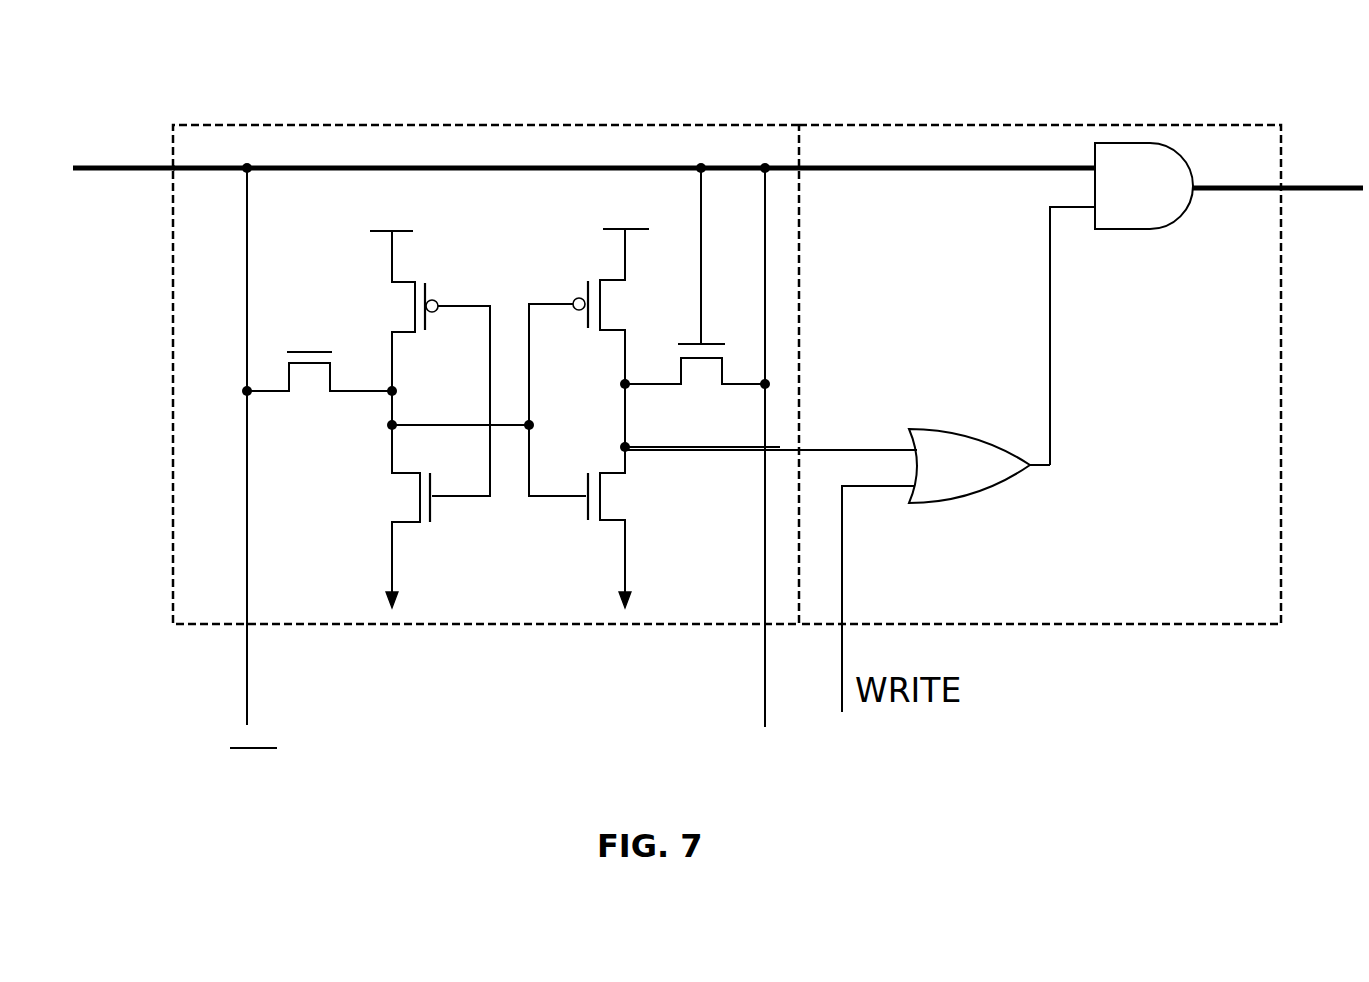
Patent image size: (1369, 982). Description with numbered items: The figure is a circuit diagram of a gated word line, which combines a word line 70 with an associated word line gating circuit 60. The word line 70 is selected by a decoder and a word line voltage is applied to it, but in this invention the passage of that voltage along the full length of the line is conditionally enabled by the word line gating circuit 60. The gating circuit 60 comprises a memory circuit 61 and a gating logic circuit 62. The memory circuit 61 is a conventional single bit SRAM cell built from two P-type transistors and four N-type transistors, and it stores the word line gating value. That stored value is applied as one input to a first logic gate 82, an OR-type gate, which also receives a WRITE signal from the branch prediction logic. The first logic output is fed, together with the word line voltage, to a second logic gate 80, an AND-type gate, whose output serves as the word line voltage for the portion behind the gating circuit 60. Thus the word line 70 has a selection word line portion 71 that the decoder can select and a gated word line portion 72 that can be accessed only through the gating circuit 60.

The word line gating circuit 60 is at (110, 382).
The memory circuit 61 is at (173, 586).
The gating logic circuit 62 is at (1281, 618).
The word line 70 is at (333, 168).
The selection word line portion 71 is at (128, 172).
The gated word line portion 72 is at (1303, 190).
The second logic gate 80 is at (1178, 225).
The first logic gate 82 is at (993, 505).